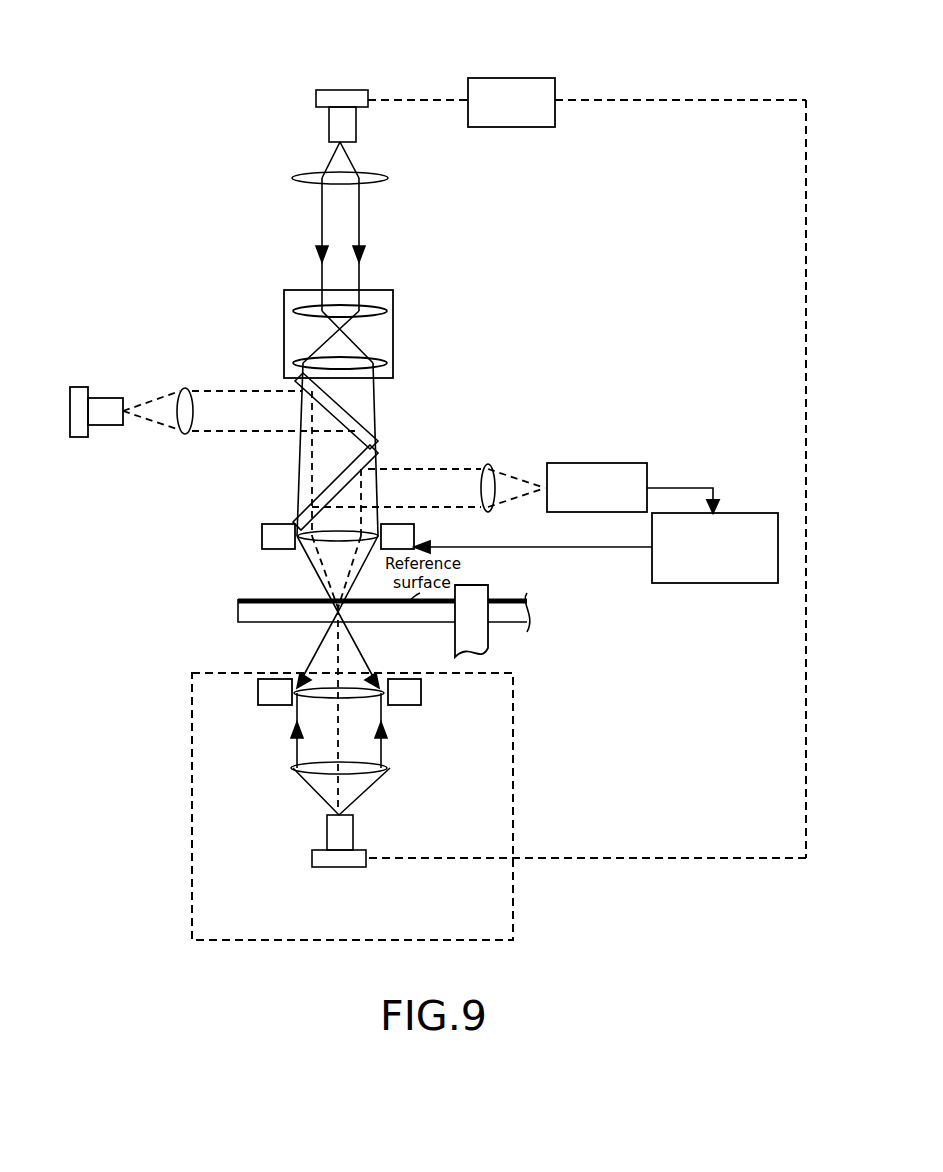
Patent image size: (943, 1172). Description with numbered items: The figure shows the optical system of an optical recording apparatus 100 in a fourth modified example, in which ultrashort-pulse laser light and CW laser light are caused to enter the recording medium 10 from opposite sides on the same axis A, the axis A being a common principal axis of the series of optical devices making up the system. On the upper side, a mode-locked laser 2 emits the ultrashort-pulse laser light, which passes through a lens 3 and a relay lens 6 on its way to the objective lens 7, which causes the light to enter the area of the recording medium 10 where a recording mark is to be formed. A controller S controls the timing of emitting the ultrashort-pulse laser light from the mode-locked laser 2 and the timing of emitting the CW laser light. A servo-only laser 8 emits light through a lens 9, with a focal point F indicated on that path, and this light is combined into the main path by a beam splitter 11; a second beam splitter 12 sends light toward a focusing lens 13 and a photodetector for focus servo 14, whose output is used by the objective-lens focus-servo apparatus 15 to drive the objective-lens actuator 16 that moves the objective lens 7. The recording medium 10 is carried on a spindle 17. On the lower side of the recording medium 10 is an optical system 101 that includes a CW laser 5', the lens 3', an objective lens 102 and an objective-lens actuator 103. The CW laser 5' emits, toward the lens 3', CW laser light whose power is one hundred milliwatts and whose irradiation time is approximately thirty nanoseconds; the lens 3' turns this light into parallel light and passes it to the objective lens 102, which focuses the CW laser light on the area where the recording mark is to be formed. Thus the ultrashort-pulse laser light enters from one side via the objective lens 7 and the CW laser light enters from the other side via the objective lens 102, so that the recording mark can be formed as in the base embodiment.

The optical recording apparatus 100 is at (404, 76).
The mode-locked laser 2 is at (316, 100).
The lens 3 is at (362, 226).
The controller S is at (510, 127).
The relay lens 6 is at (393, 330).
The beam splitter 11 is at (352, 410).
The beam splitter 12 is at (340, 481).
The servo-only laser 8 is at (78, 387).
The lens 9 is at (185, 388).
The focal point F is at (163, 425).
The focusing lens 13 is at (490, 463).
The photodetector for focus servo 14 is at (578, 463).
The objective-lens focus-servo apparatus 15 is at (720, 583).
The objective-lens actuator 16 is at (414, 530).
The objective lens 7 is at (325, 545).
The recording medium 10 is at (238, 612).
The spindle 17 is at (488, 647).
The optical system 101 is at (513, 781).
The objective lens 102 is at (317, 700).
The objective-lens actuator 103 is at (421, 692).
The lens 3' is at (369, 768).
The axis A is at (340, 786).
The CW laser 5' is at (339, 871).